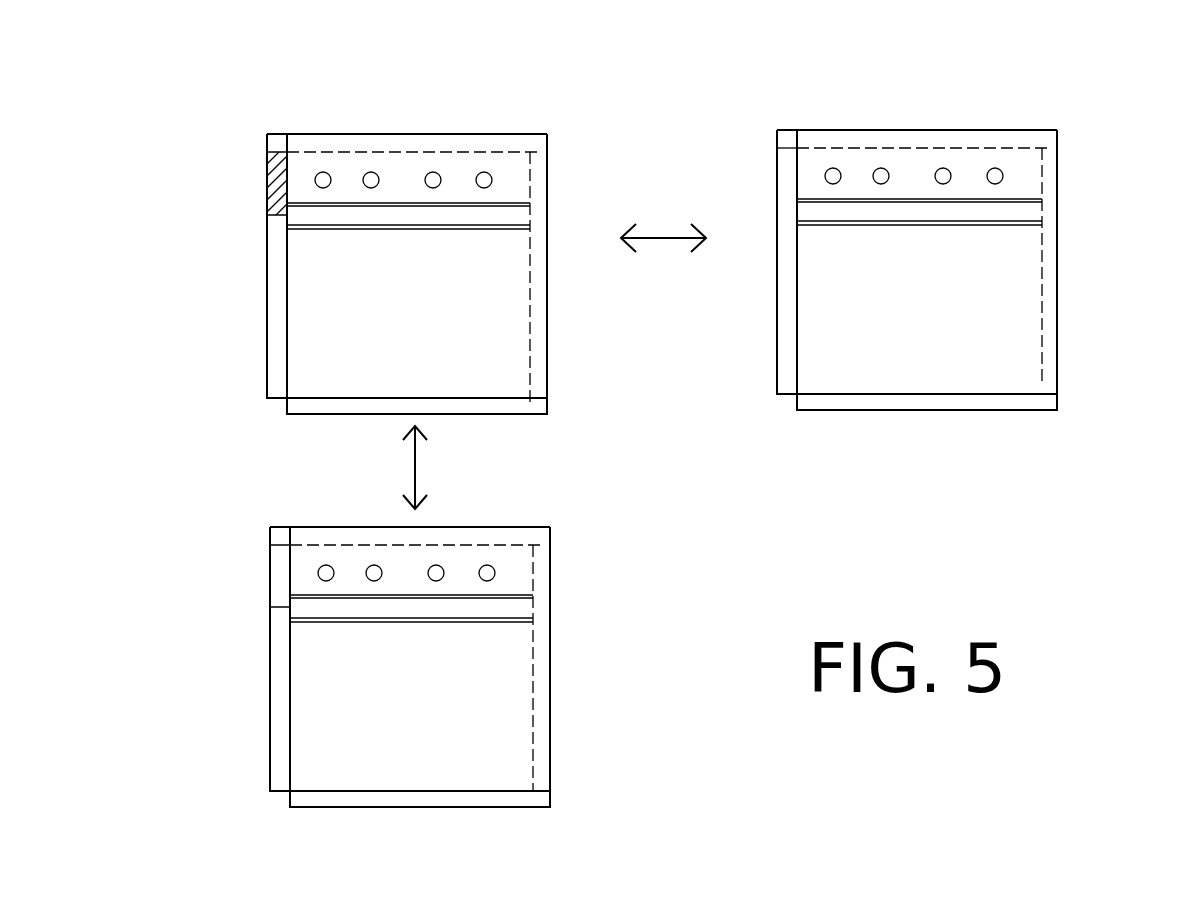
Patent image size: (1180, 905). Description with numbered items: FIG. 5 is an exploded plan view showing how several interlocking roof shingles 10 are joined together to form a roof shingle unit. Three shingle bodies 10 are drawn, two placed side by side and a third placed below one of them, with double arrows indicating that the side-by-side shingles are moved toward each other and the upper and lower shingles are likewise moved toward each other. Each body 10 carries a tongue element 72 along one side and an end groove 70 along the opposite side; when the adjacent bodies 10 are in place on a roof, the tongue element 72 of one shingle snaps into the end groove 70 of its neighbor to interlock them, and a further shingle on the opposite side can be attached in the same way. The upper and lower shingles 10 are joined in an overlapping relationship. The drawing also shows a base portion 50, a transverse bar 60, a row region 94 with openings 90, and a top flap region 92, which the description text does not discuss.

The roof shingle body 10 is at (417, 316).
The frame 50 is at (317, 407).
The connecting bar 60 is at (520, 212).
The end groove 70 is at (537, 313).
The tongue element 72 is at (268, 305).
The hole 90 is at (484, 172).
The top flap 92 is at (490, 132).
The row of holes 94 is at (679, 319).